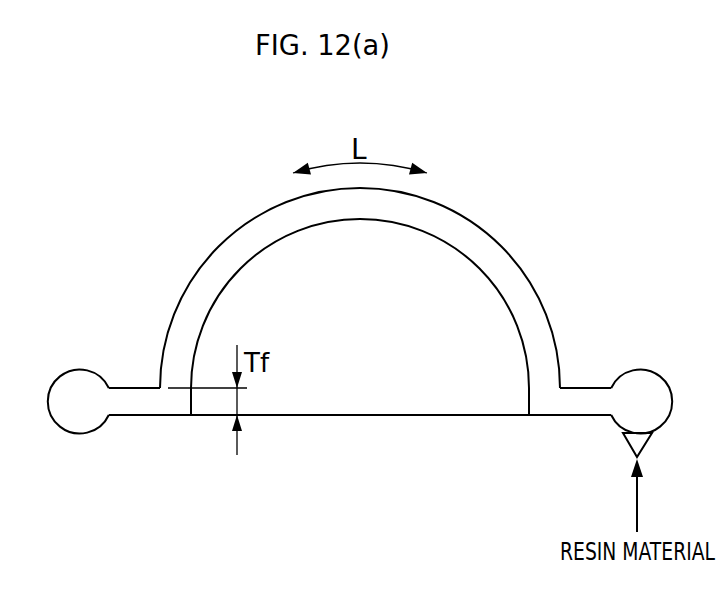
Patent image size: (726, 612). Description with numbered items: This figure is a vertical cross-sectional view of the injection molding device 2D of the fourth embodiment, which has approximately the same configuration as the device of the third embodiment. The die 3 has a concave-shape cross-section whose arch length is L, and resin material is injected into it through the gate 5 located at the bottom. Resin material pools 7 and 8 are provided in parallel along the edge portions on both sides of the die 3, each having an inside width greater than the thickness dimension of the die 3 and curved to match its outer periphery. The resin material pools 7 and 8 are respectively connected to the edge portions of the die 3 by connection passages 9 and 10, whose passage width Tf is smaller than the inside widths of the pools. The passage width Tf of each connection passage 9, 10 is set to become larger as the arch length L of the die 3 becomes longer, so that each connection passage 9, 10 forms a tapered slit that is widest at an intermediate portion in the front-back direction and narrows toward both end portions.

The injection molding device 2D is at (148, 173).
The die 3 is at (262, 212).
The gate 5 is at (628, 445).
The resin material pool 7 is at (81, 368).
The resin material pool 8 is at (638, 368).
The connection passage 9 is at (137, 388).
The connection passage 10 is at (588, 388).